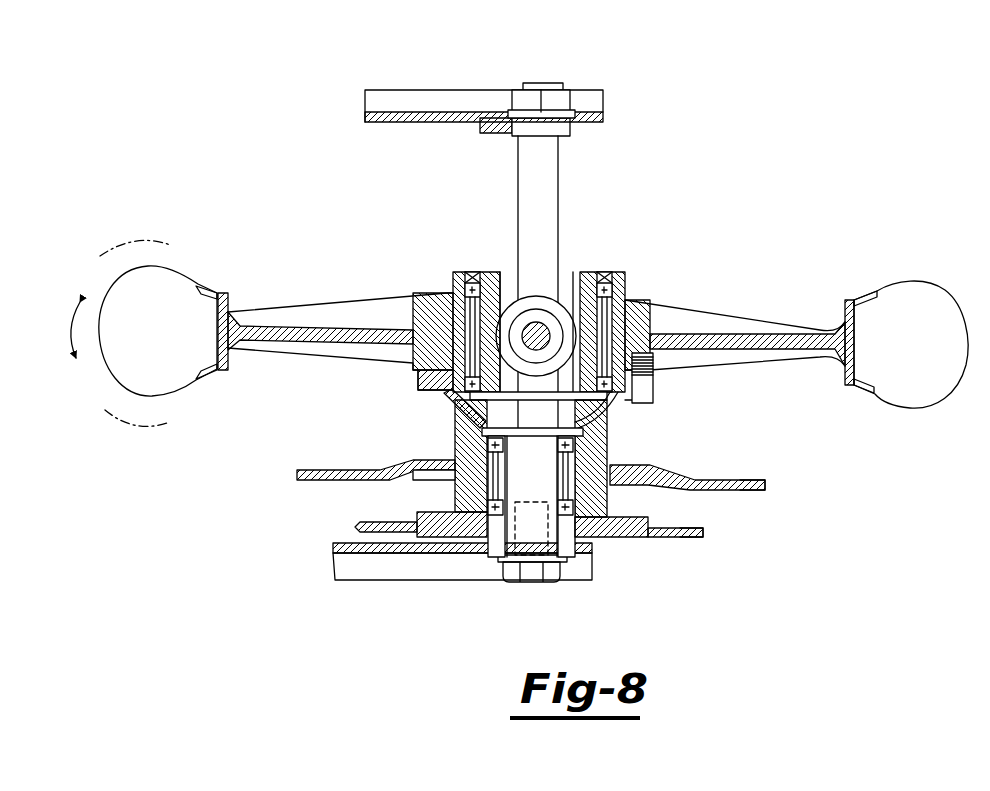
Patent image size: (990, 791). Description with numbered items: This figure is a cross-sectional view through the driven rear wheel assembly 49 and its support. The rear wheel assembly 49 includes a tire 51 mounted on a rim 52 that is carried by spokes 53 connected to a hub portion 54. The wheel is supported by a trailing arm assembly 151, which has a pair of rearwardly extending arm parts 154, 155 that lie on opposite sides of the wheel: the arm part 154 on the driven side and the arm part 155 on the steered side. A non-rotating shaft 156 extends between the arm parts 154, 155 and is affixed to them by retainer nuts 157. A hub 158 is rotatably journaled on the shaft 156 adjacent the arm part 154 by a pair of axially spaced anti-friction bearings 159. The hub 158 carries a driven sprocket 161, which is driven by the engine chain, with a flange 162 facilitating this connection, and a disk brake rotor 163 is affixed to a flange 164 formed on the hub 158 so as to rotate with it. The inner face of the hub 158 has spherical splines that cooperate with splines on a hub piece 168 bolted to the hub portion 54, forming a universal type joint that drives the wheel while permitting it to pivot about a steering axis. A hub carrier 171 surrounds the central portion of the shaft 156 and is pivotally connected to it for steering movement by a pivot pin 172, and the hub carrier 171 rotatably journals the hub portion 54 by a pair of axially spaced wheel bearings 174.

The driven rear wheel assembly 49 is at (732, 281).
The tire 51 is at (918, 281).
The rim 52 is at (853, 297).
The spokes 53 is at (758, 335).
The hub portion 54 is at (626, 310).
The trailing arm assembly 151 is at (460, 337).
The arm part 154 is at (414, 566).
The arm part 155 is at (403, 106).
The non-rotating shaft 156 is at (552, 181).
The retainer nuts 157 is at (573, 101).
The hub 158 is at (598, 450).
The anti-friction bearings 159 is at (490, 511).
The driven sprocket 161 is at (672, 539).
The flange 162 is at (640, 519).
The disk brake rotor 163 is at (766, 487).
The flange 164 is at (640, 477).
The hub piece 168 is at (448, 397).
The hub carrier 171 is at (452, 292).
The pivot pin 172 is at (524, 327).
The wheel bearings 174 is at (620, 300).